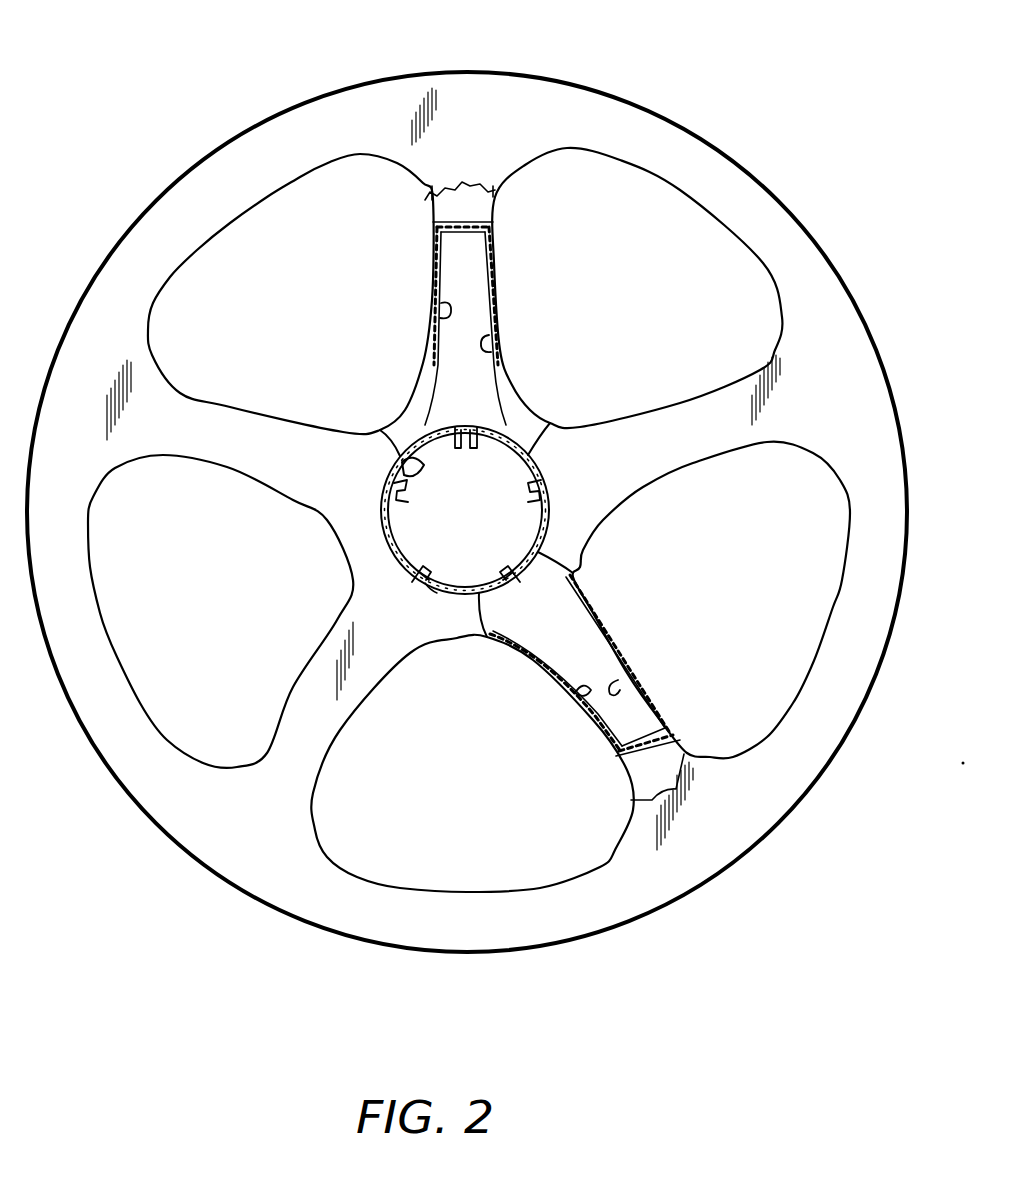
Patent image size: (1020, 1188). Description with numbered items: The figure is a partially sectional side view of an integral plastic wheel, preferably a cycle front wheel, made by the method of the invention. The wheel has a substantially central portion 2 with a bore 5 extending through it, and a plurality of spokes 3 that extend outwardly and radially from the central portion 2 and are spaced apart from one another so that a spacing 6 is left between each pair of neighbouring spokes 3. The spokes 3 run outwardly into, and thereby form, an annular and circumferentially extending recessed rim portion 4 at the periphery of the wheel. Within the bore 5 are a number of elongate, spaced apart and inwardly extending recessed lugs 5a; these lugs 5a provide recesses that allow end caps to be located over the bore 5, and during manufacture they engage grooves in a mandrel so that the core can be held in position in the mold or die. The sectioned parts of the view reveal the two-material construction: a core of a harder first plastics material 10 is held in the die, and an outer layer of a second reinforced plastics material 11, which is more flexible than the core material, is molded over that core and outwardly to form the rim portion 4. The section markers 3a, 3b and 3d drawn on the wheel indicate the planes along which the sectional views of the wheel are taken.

The central portion 2 is at (430, 618).
The spokes 3 is at (318, 733).
The section line 3a is at (456, 22).
The section line 3b,3c 3b is at (658, 222).
The section line 3d is at (516, 472).
The rim portion 4 is at (244, 110).
The bore 5 is at (413, 530).
The lugs 5a is at (425, 583).
The spacing 6 is at (281, 337).
The first plastics material 10 is at (440, 313).
The second reinforced plastics material 11 is at (432, 268).